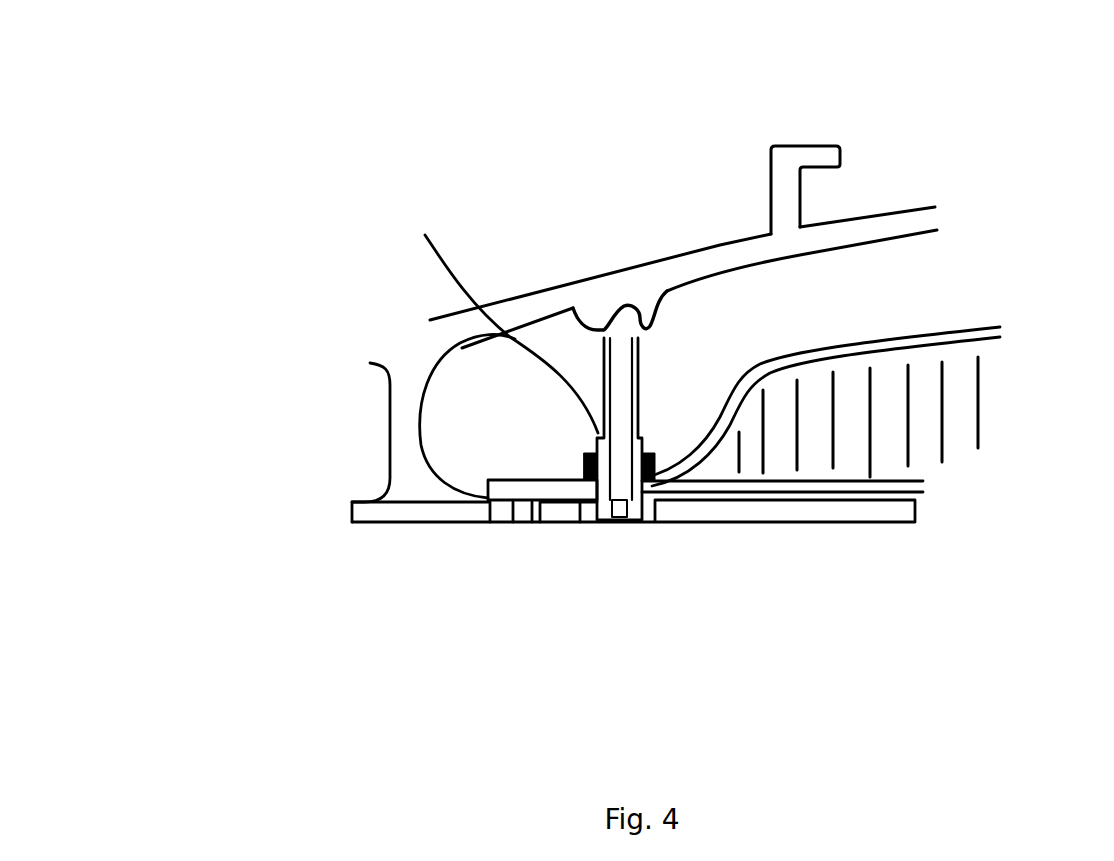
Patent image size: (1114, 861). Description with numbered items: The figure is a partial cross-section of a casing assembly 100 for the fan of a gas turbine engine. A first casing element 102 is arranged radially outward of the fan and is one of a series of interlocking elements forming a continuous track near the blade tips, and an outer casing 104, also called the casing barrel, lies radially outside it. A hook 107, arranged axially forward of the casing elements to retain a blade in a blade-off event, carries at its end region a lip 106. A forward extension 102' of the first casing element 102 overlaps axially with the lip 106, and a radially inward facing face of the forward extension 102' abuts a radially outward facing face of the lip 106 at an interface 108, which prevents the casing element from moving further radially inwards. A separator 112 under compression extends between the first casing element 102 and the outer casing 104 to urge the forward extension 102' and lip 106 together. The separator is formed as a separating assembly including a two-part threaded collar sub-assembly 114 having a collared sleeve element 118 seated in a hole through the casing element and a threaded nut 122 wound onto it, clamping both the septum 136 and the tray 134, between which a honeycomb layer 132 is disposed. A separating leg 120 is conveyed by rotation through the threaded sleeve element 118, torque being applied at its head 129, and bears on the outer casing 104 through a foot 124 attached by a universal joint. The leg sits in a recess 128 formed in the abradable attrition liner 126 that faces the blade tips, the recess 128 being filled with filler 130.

The casing assembly 100 is at (408, 139).
The first casing element 102 is at (667, 609).
The forward extension 102' is at (435, 349).
The outer casing 104 is at (699, 245).
The lip 106 is at (481, 506).
The hook 107 is at (405, 427).
The interface 108 is at (518, 508).
The separator 112 is at (683, 362).
The two-part threaded collar sub-assembly 114 is at (501, 319).
The collared sleeve element 118 is at (649, 431).
The separating leg 120 is at (600, 366).
The threaded nut 122 is at (575, 453).
The foot 124 is at (600, 306).
The attrition liner 126 is at (777, 522).
The recess 128 is at (647, 526).
The head 129 is at (617, 536).
The filler 130 is at (590, 526).
The honeycomb layer 132 is at (957, 405).
The tray 134 is at (972, 326).
The septum 136 is at (929, 491).